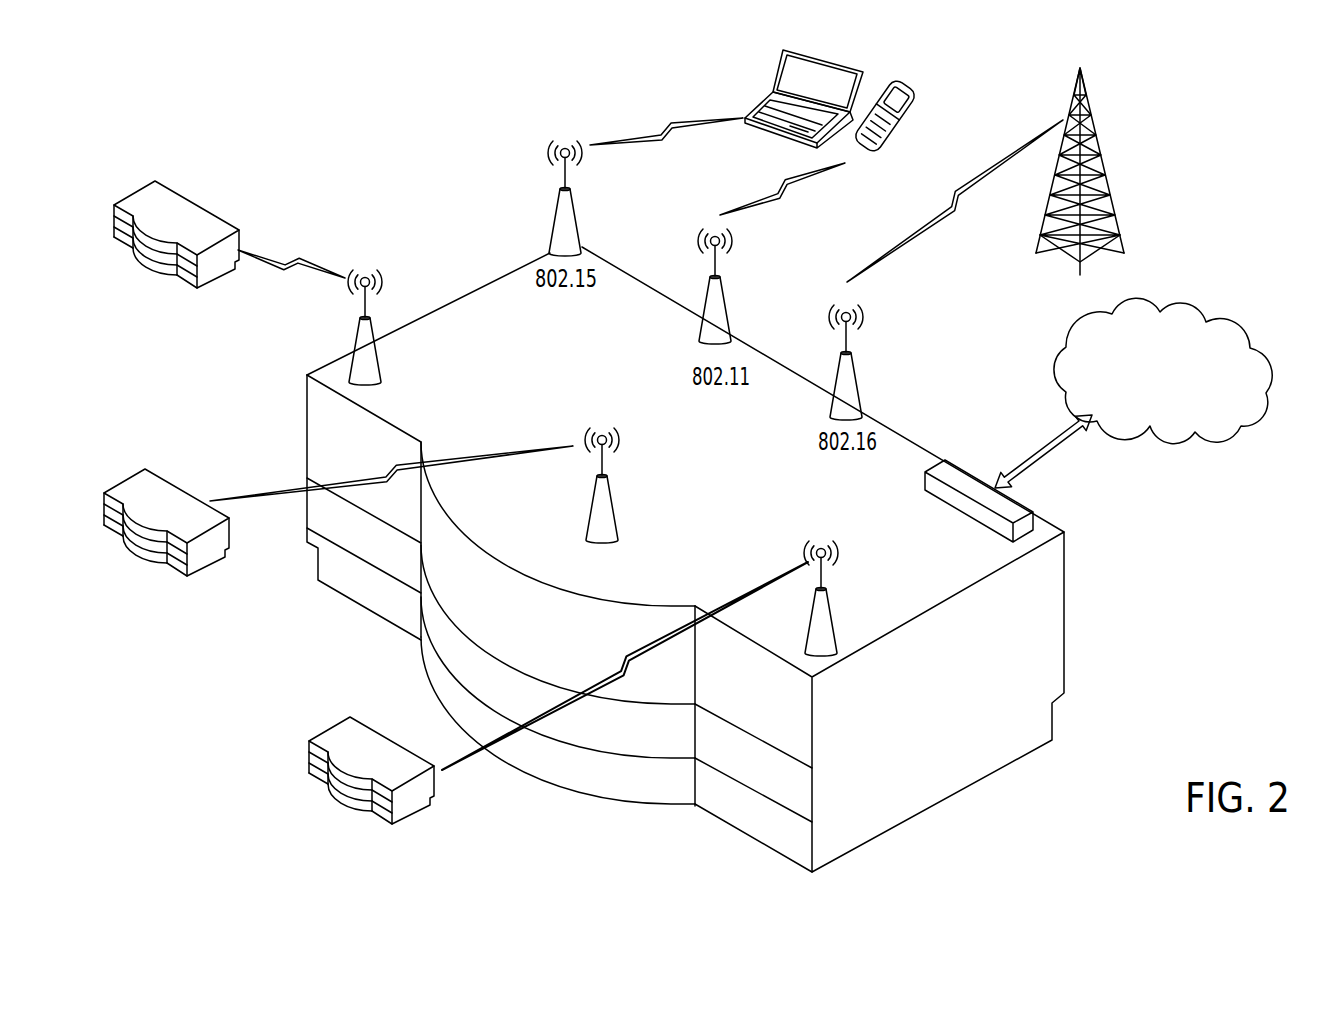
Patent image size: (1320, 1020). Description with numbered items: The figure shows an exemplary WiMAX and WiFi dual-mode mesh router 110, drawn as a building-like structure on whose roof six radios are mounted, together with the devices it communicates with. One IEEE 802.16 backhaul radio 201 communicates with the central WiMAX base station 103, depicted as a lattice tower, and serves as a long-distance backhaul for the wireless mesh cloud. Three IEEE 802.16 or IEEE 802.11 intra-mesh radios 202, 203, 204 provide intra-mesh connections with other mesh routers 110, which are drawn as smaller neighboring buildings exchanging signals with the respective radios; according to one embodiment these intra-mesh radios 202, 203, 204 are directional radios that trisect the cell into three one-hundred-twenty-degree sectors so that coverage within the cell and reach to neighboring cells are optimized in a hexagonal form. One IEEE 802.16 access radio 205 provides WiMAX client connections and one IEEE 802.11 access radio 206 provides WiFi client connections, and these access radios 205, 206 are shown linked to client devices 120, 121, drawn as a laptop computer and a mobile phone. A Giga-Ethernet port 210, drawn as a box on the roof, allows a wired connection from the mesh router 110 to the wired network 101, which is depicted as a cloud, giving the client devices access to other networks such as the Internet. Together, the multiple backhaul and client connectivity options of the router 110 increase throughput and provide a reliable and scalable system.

The dual-mode mesh router 110 is at (183, 230).
The intra-mesh radio 202 is at (377, 327).
The intra-mesh radio 203 is at (698, 478).
The intra-mesh radio 204 is at (917, 580).
The access radio 205 is at (658, 208).
The access radio 206 is at (805, 295).
The backhaul radio 201 is at (957, 377).
The client device 120 is at (797, 75).
The client device 121 is at (910, 105).
The WiMAX base station 103 is at (1152, 180).
The wired network 101 is at (1178, 408).
The Giga-Ethernet port 210 is at (1020, 527).